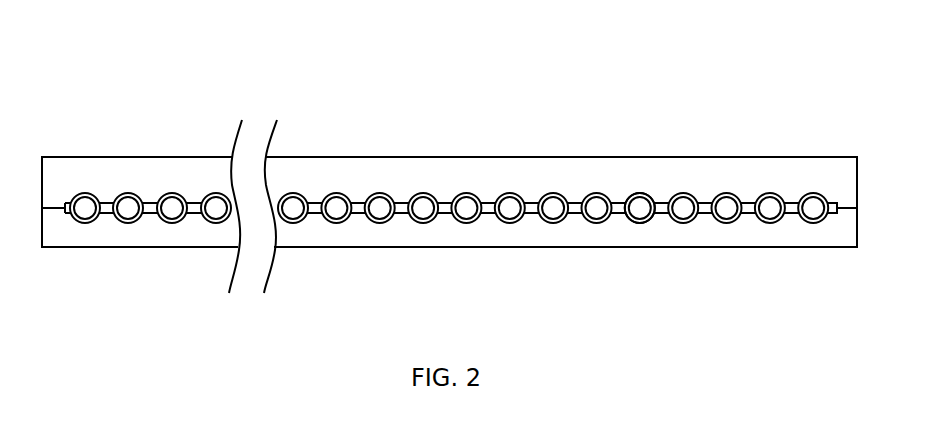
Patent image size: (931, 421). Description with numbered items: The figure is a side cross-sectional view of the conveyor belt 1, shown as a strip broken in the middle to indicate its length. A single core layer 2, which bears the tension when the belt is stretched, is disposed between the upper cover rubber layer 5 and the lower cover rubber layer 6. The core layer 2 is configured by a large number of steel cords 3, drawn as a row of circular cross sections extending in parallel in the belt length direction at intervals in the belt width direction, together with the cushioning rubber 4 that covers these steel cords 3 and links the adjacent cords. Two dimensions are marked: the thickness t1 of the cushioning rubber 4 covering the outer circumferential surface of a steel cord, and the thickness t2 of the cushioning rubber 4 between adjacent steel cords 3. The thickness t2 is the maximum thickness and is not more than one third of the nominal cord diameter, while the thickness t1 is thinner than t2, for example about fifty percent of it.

The conveyor belt 1 is at (780, 162).
The core layer 2 is at (651, 197).
The steel cords 3 is at (174, 200).
The cushioning rubber 4 is at (296, 195).
The upper cover rubber layer 5 is at (388, 175).
The lower cover rubber layer 6 is at (400, 240).
The thickness of the cushioning rubber covering the steel cords t1 is at (518, 242).
The thickness of the cushioning rubber between adjacent steel cords t2 is at (707, 247).